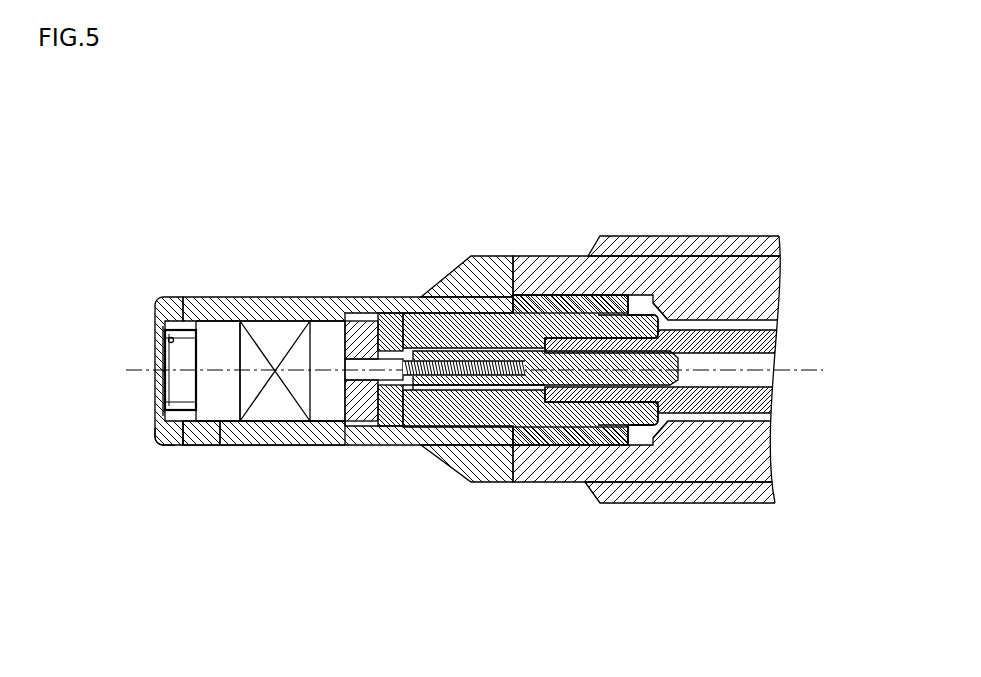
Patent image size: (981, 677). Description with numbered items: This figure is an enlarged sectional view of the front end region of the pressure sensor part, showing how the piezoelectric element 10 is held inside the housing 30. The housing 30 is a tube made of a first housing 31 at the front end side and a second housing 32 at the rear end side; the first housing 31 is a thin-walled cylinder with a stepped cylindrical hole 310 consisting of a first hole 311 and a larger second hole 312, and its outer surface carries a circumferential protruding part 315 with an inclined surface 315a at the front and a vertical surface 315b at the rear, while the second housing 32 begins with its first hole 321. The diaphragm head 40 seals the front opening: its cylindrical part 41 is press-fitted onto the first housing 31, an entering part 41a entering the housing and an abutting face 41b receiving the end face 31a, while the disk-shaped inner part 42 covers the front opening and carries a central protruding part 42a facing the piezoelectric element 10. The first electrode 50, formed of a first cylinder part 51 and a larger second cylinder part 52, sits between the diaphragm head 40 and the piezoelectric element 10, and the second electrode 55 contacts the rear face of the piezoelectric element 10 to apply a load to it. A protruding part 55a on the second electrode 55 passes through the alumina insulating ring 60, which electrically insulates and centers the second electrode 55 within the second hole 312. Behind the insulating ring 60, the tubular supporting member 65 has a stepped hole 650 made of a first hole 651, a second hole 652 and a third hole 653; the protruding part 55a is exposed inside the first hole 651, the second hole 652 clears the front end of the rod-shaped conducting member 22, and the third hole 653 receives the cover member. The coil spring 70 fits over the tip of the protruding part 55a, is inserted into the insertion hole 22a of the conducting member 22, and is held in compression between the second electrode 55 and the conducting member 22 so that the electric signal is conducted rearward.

The piezoelectric element 10 is at (277, 313).
The conducting member 22 is at (717, 392).
The insertion hole 22a is at (530, 400).
The housing 30 is at (543, 602).
The first housing 31 is at (485, 475).
The end face 31a is at (147, 432).
The second housing 32 is at (606, 366).
The diaphragm head 40 is at (160, 289).
The cylindrical part 41 is at (172, 289).
The entering part 41a is at (185, 289).
The abutting face 41b is at (170, 289).
The inner part 42 is at (147, 390).
The protruding part 42a is at (150, 320).
The first electrode 50 is at (235, 515).
The first cylinder part 51 is at (193, 437).
The second cylinder part 52 is at (212, 437).
The second electrode 55 is at (312, 289).
The protruding part 55a is at (392, 350).
The insulating ring 60 is at (365, 291).
The supporting member 65 is at (468, 305).
The coil spring 70 is at (482, 370).
The cylindrical hole 310 is at (253, 313).
The first hole 311 is at (217, 313).
The second hole 312 is at (333, 289).
The protruding part 315 is at (507, 268).
The inclined surface 315a is at (440, 268).
The vertical surface 315b is at (532, 268).
The first hole 321 is at (672, 310).
The hole 650 is at (380, 378).
The first hole 651 is at (393, 383).
The second hole 652 is at (442, 376).
The third hole 653 is at (641, 390).